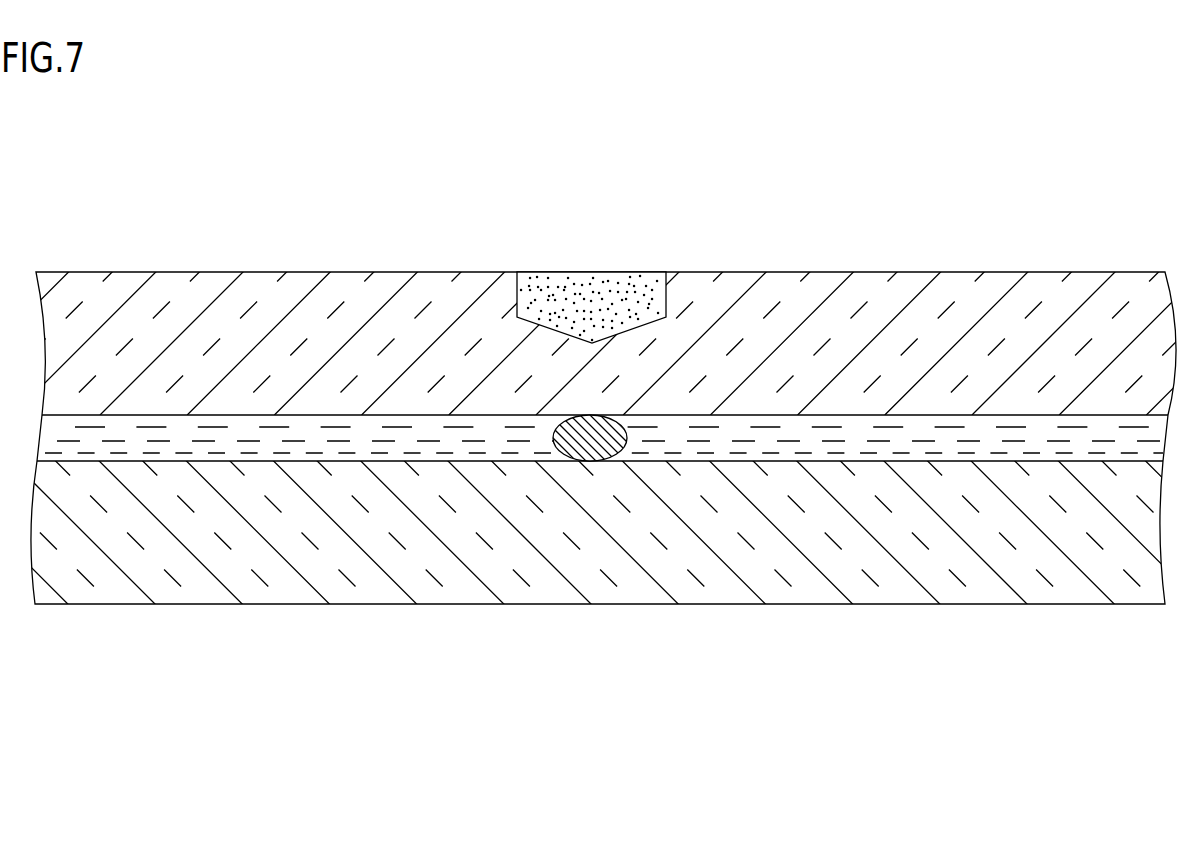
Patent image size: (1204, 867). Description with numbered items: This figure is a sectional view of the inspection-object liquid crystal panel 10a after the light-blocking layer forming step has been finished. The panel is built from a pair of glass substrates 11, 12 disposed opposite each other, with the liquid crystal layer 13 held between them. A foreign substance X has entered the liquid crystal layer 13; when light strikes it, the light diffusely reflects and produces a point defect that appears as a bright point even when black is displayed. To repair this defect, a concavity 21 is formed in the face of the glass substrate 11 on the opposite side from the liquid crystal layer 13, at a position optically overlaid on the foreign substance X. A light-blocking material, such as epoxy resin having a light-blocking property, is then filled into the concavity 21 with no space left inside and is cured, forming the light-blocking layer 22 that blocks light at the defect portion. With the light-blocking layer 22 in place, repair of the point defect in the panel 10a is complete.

The inspection-object liquid crystal panel 10a is at (192, 625).
The glass substrate 11 is at (886, 307).
The glass substrate 12 is at (816, 590).
The liquid crystal layer 13 is at (940, 440).
The concavity 21 is at (565, 333).
The light-blocking layer 22 is at (593, 288).
The foreign substance X is at (583, 437).